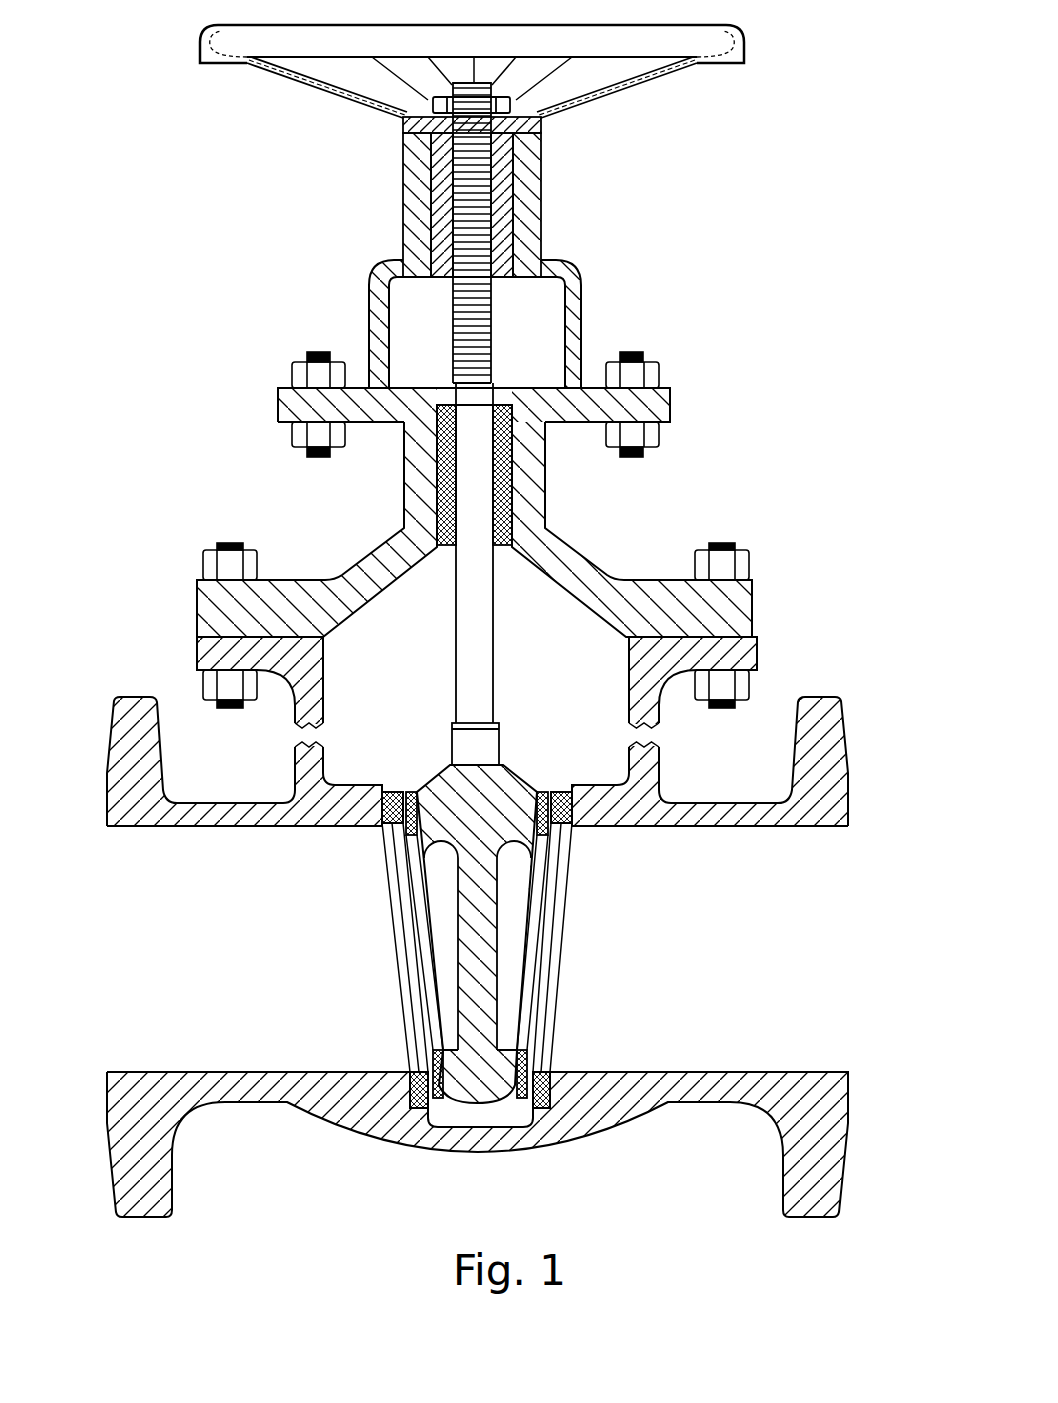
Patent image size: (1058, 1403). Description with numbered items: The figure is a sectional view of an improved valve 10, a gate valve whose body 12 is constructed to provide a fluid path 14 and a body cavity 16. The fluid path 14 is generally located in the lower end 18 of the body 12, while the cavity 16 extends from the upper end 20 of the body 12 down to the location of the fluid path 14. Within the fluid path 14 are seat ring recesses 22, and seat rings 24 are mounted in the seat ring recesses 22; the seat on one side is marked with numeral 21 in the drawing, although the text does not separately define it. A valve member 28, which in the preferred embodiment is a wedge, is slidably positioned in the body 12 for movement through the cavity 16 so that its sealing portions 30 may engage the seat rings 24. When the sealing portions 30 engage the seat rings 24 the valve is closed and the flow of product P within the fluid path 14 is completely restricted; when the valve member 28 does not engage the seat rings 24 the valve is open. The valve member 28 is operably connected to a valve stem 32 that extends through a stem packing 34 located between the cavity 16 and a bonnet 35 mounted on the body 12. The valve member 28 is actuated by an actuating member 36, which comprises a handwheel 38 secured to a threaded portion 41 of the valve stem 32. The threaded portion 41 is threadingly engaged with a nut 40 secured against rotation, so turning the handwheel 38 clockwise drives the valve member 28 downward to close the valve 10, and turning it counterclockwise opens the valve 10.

The improved valve 10 is at (226, 226).
The body 12 is at (136, 690).
The fluid path 14 is at (200, 939).
The body cavity 16 is at (530, 618).
The lower end 18 is at (250, 1103).
The upper end 20 is at (160, 630).
The first seat ring 21 is at (410, 1070).
The seat ring recesses 22 is at (432, 1105).
The seat rings 24 is at (556, 1062).
The valve member 28 is at (475, 915).
The sealing portions 30 is at (495, 815).
The valve stem 32 is at (497, 676).
The stem packing 34 is at (438, 515).
The bonnet 35 is at (545, 487).
The actuating member 36 is at (190, 38).
The handwheel 38 is at (745, 35).
The nut 40 is at (497, 232).
The threaded portion 41 is at (468, 225).
The product P is at (737, 905).